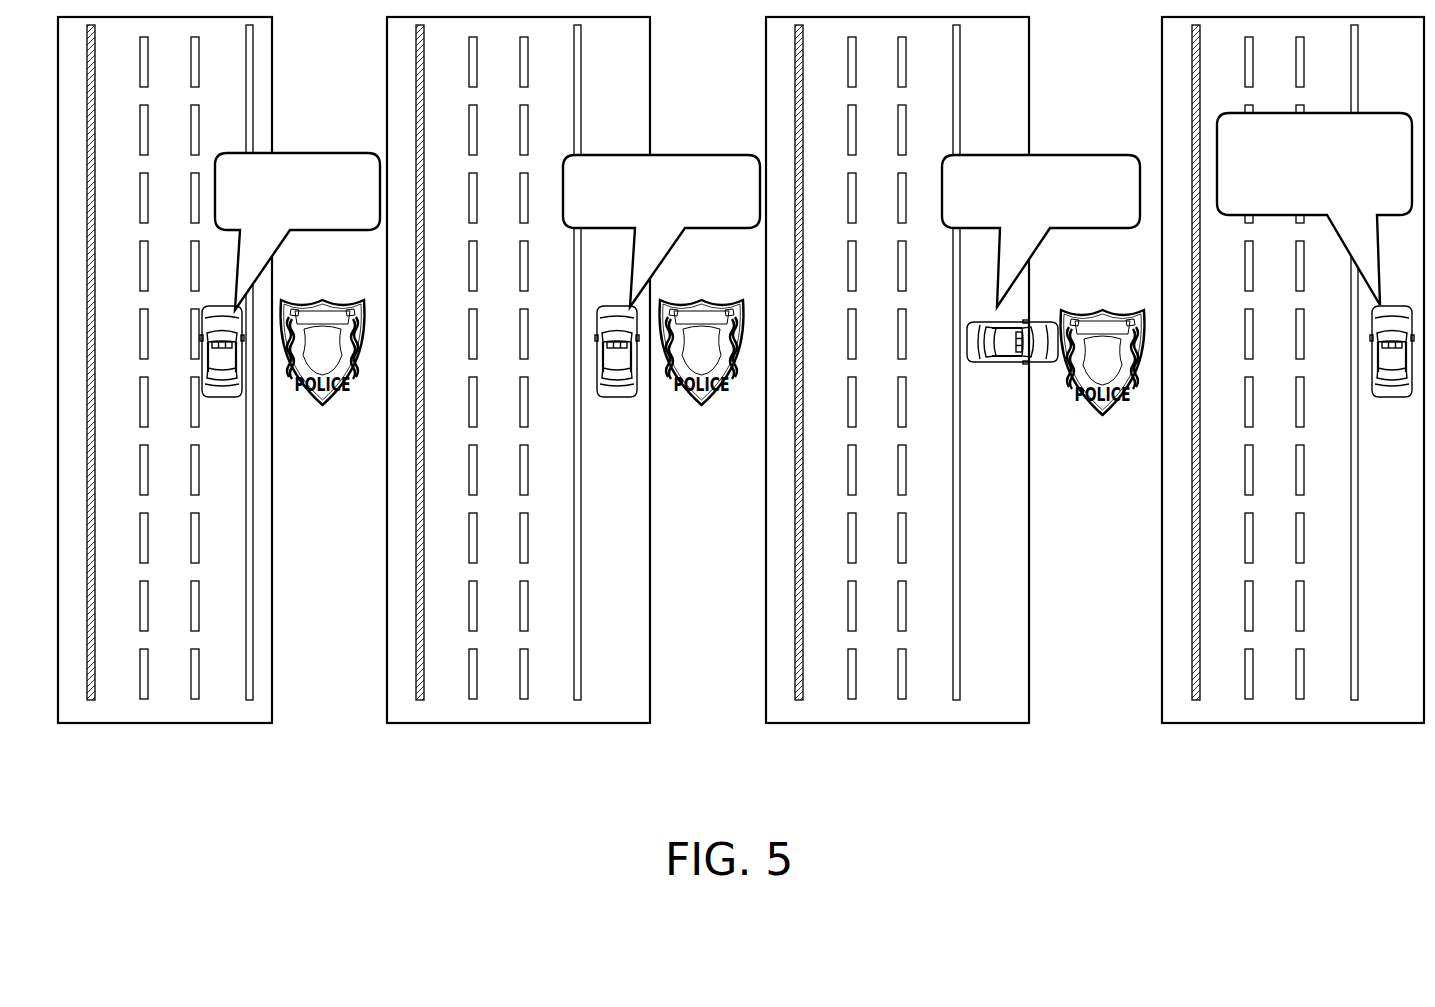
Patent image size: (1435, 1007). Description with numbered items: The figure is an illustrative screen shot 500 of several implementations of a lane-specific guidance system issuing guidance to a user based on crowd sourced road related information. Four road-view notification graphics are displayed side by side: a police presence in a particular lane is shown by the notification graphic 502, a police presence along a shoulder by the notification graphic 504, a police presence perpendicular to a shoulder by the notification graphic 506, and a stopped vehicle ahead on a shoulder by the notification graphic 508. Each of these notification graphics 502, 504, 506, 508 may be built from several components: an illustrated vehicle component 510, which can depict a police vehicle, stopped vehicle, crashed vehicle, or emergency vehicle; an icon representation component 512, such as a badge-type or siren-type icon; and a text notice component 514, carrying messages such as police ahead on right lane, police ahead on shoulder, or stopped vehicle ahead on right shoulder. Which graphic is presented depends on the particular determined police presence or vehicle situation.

The screen shot 500 is at (672, 805).
The notification graphic of a police presence in a particular lane 502 is at (163, 723).
The notification graphic of a police presence along a shoulder 504 is at (543, 723).
The notification graphic of a police presence perpendicular to a shoulder 506 is at (922, 723).
The notification graphic of a stopped vehicle ahead on a shoulder 508 is at (1318, 723).
The illustrated vehicle component 510 is at (225, 391).
The icon representation component 512 is at (343, 397).
The text notice component 514 is at (307, 152).